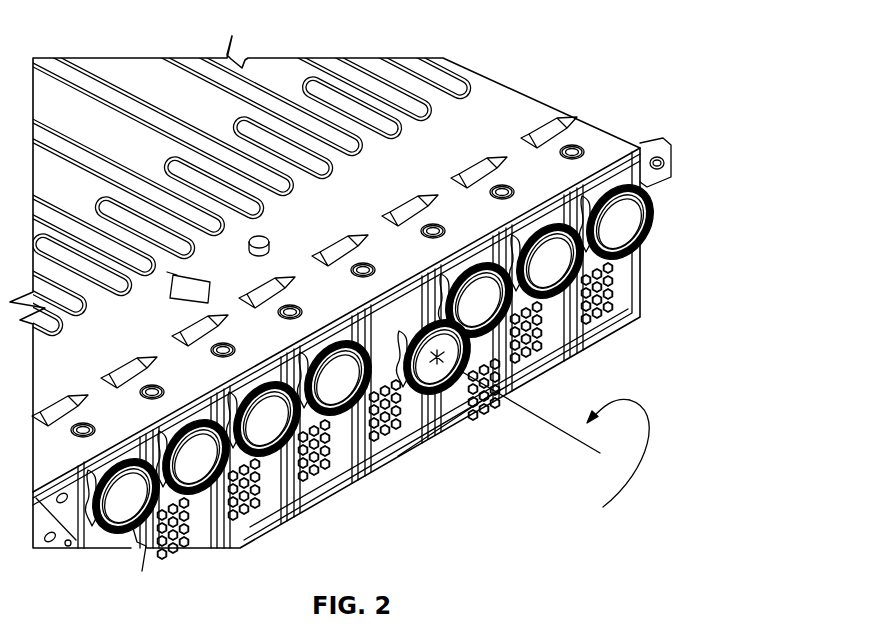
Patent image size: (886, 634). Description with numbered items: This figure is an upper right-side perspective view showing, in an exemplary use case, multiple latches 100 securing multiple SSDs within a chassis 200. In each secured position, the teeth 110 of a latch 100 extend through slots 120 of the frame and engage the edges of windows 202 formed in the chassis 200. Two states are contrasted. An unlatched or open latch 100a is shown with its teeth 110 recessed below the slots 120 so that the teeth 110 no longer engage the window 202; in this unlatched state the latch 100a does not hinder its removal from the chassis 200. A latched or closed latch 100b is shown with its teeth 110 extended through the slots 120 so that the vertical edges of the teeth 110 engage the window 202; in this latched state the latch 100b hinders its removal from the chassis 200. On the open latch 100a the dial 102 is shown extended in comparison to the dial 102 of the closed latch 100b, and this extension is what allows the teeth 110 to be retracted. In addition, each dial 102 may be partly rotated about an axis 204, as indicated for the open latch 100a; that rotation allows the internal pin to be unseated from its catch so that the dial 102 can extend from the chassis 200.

The chassis 200 is at (491, 100).
The teeth 110 is at (302, 295).
The slots 120 is at (353, 212).
The window 202 is at (388, 327).
The latch 100 is at (630, 319).
The unlatched latch 100a is at (453, 386).
The latched latch 100b is at (353, 392).
The dial 102 is at (471, 417).
The axis 204 is at (563, 432).